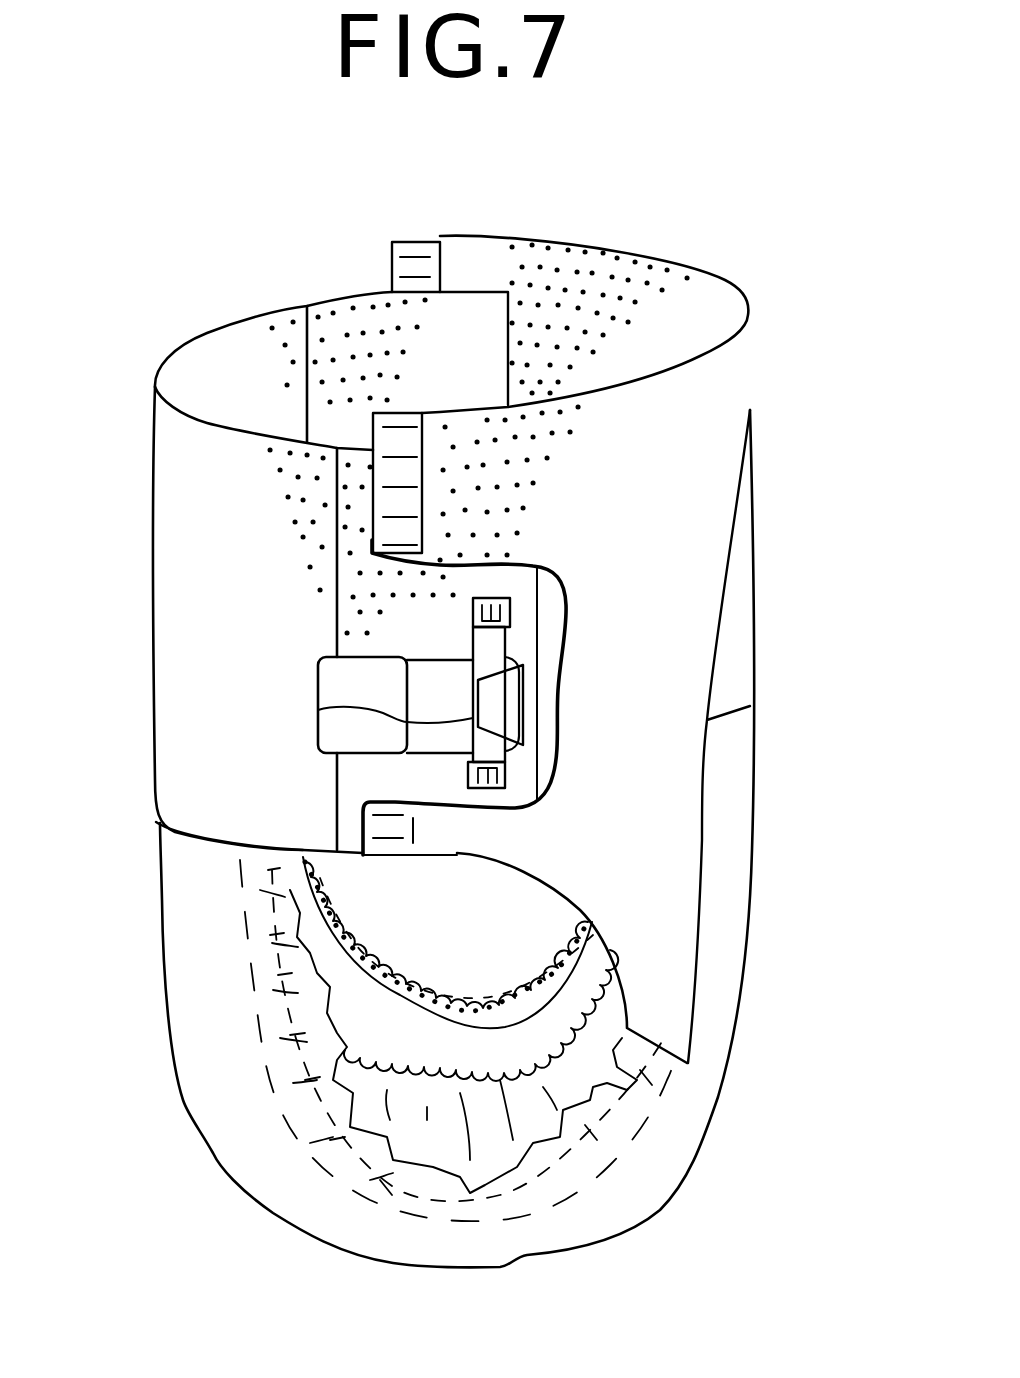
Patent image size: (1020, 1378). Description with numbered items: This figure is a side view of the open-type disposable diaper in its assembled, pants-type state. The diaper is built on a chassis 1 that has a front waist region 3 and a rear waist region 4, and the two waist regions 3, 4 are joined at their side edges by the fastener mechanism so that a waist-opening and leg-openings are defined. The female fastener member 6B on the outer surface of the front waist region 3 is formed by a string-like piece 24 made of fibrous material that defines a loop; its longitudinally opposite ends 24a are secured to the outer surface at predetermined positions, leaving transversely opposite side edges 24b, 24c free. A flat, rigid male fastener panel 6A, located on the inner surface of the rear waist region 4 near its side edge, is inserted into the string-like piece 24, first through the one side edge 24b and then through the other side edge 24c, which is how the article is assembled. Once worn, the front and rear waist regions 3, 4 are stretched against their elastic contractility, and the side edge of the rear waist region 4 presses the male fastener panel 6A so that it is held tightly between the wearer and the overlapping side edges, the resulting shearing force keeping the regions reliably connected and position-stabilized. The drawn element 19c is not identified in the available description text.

The chassis 1 is at (698, 260).
The front waist region 3 is at (180, 790).
The rear waist region 4 is at (740, 396).
The male fastener panel 6A is at (328, 693).
The female fastener member 6B is at (560, 715).
The pocket opening edge 19c is at (473, 637).
The string-like piece 24 is at (560, 715).
The longitudinally opposite ends 24a is at (497, 602).
The side edge 24b is at (318, 706).
The side edge 24c is at (513, 648).